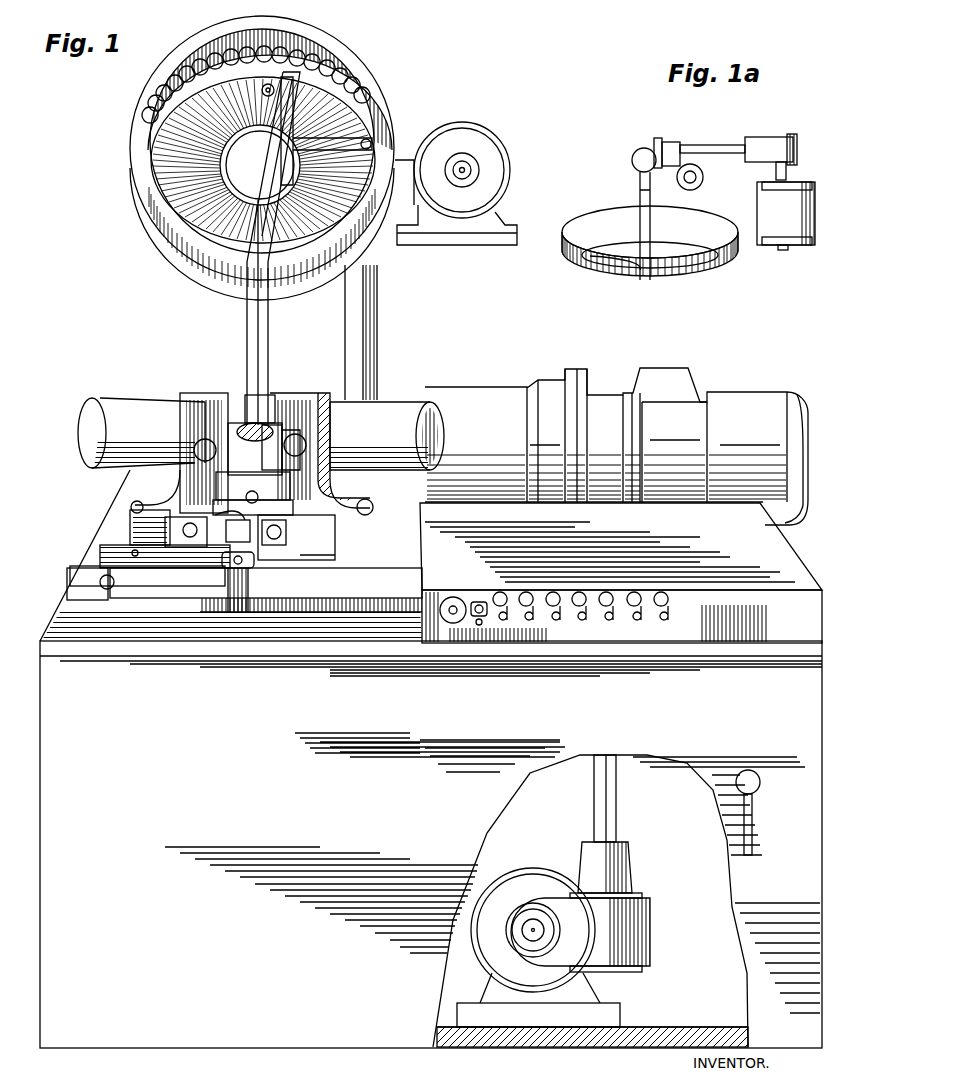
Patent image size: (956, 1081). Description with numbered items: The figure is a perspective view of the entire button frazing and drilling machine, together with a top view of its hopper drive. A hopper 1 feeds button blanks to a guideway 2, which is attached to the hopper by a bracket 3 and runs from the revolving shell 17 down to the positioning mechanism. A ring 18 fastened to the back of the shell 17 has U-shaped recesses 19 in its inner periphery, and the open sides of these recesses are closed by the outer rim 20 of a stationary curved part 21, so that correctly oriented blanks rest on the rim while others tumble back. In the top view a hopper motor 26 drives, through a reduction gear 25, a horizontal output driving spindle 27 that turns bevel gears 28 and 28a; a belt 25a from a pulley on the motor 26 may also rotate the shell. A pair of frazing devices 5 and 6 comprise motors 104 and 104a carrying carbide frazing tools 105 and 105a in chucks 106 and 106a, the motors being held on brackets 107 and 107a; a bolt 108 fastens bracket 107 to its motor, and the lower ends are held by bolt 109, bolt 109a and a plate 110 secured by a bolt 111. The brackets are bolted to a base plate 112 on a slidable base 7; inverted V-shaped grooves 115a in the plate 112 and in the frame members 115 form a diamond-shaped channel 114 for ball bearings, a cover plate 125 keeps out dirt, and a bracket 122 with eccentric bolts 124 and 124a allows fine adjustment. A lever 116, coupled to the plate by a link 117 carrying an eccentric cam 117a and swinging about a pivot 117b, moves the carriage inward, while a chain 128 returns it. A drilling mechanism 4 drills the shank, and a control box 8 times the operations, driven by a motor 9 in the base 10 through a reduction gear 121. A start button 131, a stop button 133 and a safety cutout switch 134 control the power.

In FIG. 1, the hopper 1 is at (125, 157).
In FIG. 1, the guideway 2 is at (278, 314).
In FIG. 1, the bracket 3 is at (362, 140).
In FIG. 1, the drilling mechanism 4 is at (488, 380).
In FIG. 1, the frazing device 5 is at (122, 396).
In FIG. 1, the frazing device 6 is at (375, 414).
In FIG. 1, the slidable base 7 is at (162, 580).
In FIG. 1, the control box 8 is at (621, 573).
In FIG. 1, the motor 9 is at (518, 880).
In FIG. 1, the base 10 is at (207, 1045).
In FIG. 1, the revolving shell 17 is at (132, 110).
In FIG. 1a, the revolving shell 17 is at (722, 228).
In FIG. 1, the ring 18 is at (340, 96).
In FIG. 1, the U-shaped recesses 19 is at (182, 92).
In FIG. 1, the outer rim 20 is at (320, 72).
In FIG. 1, the stationary curved part 21 is at (356, 118).
In FIG. 1a, the reduction gear 25 is at (772, 136).
In FIG. 1, the belt 25a is at (426, 112).
In FIG. 1, the hopper motor 26 is at (466, 128).
In FIG. 1a, the hopper motor 26 is at (786, 216).
In FIG. 1a, the output driving spindle 27 is at (702, 146).
In FIG. 1a, the bevel gear 28 is at (635, 150).
In FIG. 1a, the bevel gear 28a is at (656, 140).
In FIG. 1, the motor 104 is at (100, 412).
In FIG. 1, the motor 104a is at (395, 410).
In FIG. 1, the frazing tool 105 is at (248, 424).
In FIG. 1, the frazing tool 105a is at (272, 428).
In FIG. 1, the chuck 106 is at (208, 395).
In FIG. 1, the chuck 106a is at (285, 430).
In FIG. 1, the bracket 107 is at (190, 394).
In FIG. 1, the bracket 107a is at (330, 392).
In FIG. 1, the bolt 108 is at (200, 448).
In FIG. 1, the bolt 109 is at (135, 502).
In FIG. 1, the bolt 109a is at (366, 515).
In FIG. 1, the plate 110 is at (300, 525).
In FIG. 1, the bolt 111 is at (252, 492).
In FIG. 1, the base plate 112 is at (125, 600).
In FIG. 1, the diamond-shaped channel 114 is at (95, 595).
In FIG. 1, the frame members 115 is at (78, 590).
In FIG. 1, the inverted V-shaped groove 115a is at (60, 577).
In FIG. 1, the lever 116 is at (318, 610).
In FIG. 1, the link 117 is at (242, 570).
In FIG. 1, the eccentric cam 117a is at (221, 508).
In FIG. 1, the pivot 117b is at (226, 580).
In FIG. 1, the reduction gear 121 is at (640, 948).
In FIG. 1, the bracket 122 is at (135, 540).
In FIG. 1, the bolt 124 is at (128, 516).
In FIG. 1, the bolt 124a is at (295, 522).
In FIG. 1, the cover plate 125 is at (90, 560).
In FIG. 1, the chain 128 is at (390, 570).
In FIG. 1, the start button 131 is at (452, 624).
In FIG. 1, the stop button 133 is at (478, 626).
In FIG. 1, the safety cutout switch 134 is at (755, 790).